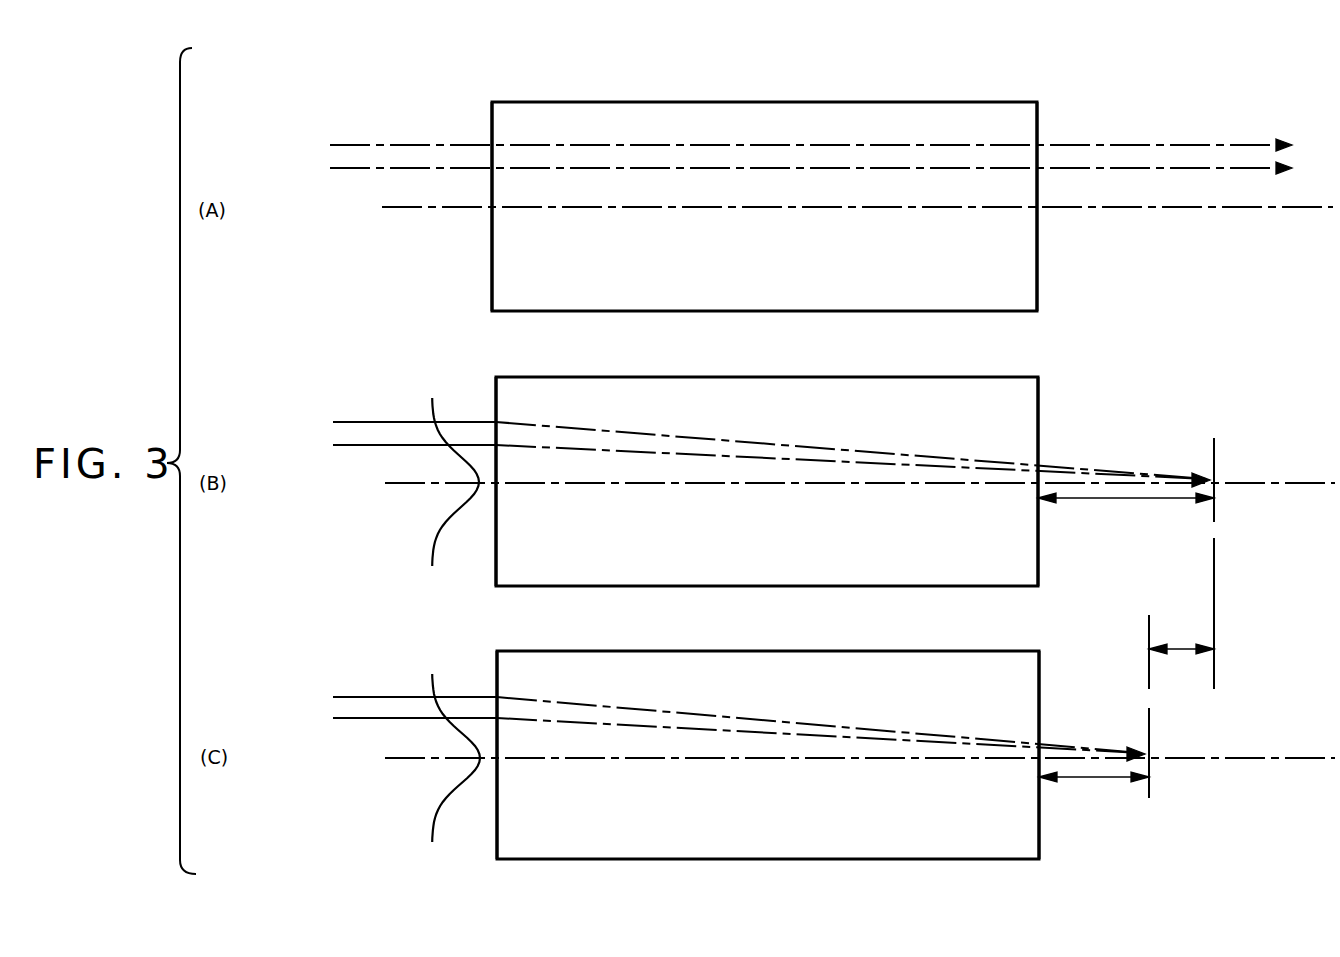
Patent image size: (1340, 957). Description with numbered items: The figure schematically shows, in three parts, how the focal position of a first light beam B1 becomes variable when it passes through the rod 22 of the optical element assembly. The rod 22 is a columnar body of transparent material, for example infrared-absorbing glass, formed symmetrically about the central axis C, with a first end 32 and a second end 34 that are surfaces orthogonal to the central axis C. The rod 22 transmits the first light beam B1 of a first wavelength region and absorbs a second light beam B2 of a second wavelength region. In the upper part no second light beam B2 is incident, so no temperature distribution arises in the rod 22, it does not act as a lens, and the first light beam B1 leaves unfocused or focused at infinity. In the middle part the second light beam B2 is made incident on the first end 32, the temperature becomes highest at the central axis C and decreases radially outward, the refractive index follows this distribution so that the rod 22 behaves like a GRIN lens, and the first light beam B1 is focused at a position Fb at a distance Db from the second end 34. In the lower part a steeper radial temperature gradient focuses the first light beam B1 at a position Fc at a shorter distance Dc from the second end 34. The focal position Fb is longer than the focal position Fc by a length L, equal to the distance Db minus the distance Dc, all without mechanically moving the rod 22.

The rod 22 is at (833, 102).
The first end 32 is at (492, 118).
The second end 34 is at (1037, 120).
The first light beam B1 is at (793, 450).
The second light beam B2 is at (441, 626).
The central axis C is at (1322, 204).
The focal position Fb is at (1231, 563).
The focal position Fc is at (1165, 706).
The distance Db is at (1126, 509).
The distance Dc is at (1094, 788).
The length L is at (1181, 637).